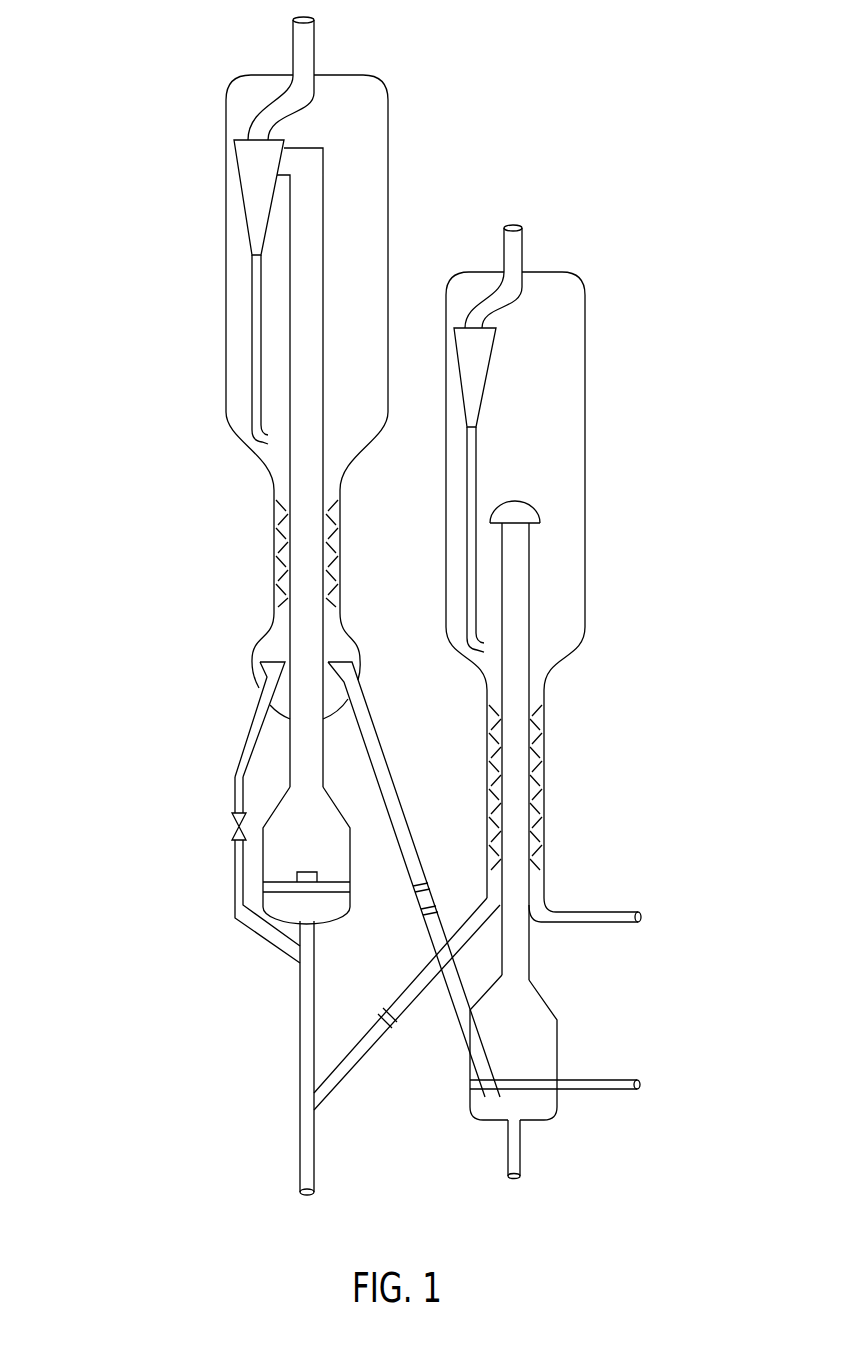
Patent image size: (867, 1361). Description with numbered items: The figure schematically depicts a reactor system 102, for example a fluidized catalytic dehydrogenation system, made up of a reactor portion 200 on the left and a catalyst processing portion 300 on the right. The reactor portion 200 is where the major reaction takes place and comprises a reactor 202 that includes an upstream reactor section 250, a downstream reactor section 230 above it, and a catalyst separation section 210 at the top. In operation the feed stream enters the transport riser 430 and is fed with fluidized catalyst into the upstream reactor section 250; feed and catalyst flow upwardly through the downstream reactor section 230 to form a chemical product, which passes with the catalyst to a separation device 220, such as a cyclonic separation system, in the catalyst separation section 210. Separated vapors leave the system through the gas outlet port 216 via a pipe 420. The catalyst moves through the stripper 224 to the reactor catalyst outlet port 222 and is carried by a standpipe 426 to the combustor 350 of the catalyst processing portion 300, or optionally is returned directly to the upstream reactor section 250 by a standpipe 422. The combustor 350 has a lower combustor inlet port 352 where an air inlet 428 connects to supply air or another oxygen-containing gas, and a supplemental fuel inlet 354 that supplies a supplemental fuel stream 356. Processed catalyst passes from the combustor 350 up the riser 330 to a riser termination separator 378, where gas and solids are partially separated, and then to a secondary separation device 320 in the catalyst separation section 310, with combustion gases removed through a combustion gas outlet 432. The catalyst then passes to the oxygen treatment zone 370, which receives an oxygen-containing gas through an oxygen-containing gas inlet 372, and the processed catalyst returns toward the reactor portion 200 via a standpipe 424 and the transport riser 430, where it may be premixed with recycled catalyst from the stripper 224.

The reactor system 102 is at (596, 86).
The reactor portion 200 is at (148, 230).
The reactor 202 is at (364, 856).
The catalyst separation section 210 is at (226, 338).
The gas outlet port 216 is at (303, 72).
The separation device 220 is at (237, 160).
The reactor catalyst outlet port 222 is at (352, 706).
The stripper 224 is at (279, 537).
The downstream reactor section 230 is at (290, 736).
The upstream reactor section 250 is at (262, 848).
The catalyst processing portion 300 is at (645, 524).
The catalyst separation section 310 is at (586, 352).
The secondary separation device 320 is at (464, 418).
The riser 330 is at (532, 964).
The combustor 350 is at (558, 1040).
The lower combustor inlet port 352 is at (507, 1136).
The supplemental fuel inlet 354 is at (625, 1092).
The supplemental fuel stream 356 is at (648, 1084).
The oxygen treatment zone 370 is at (537, 785).
The oxygen-containing gas inlet 372 is at (610, 911).
The riser termination separator 378 is at (517, 527).
The pipe 420 is at (317, 58).
The standpipe 422 is at (236, 889).
The standpipe 424 is at (378, 1042).
The standpipe 426 is at (428, 883).
The air inlet 428 is at (521, 1170).
The transport riser 430 is at (316, 946).
The combustion gas outlet 432 is at (524, 240).